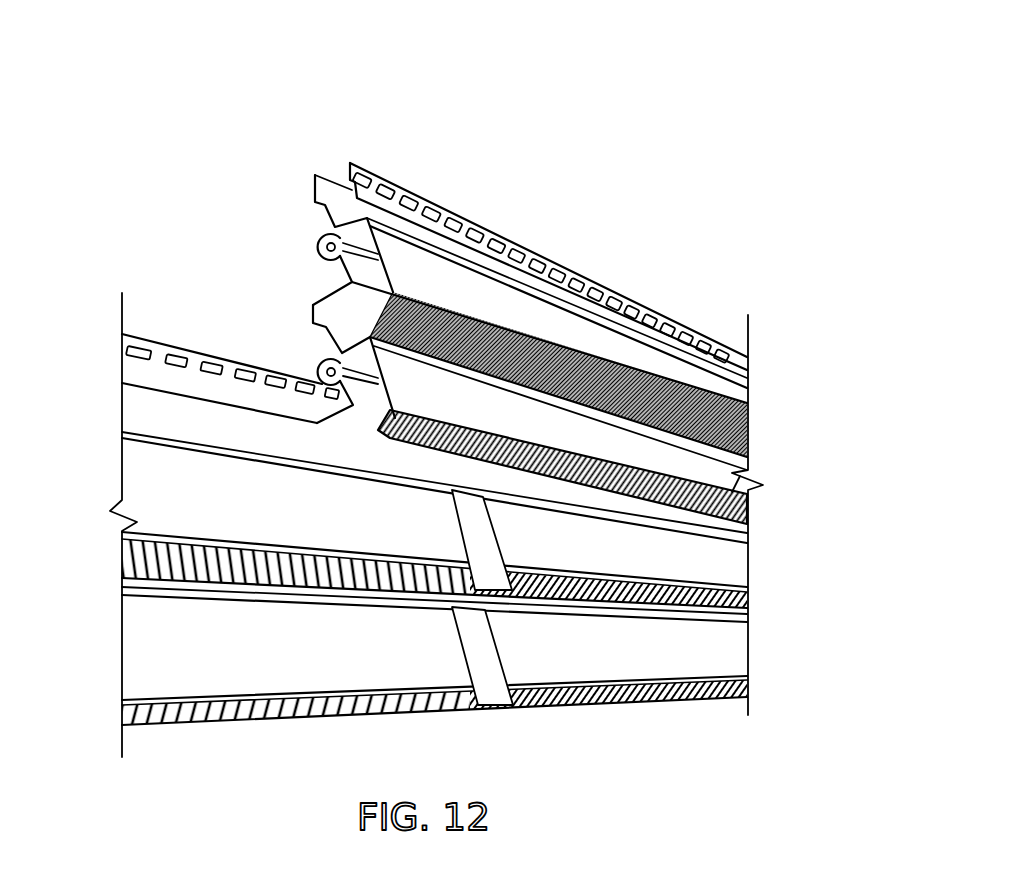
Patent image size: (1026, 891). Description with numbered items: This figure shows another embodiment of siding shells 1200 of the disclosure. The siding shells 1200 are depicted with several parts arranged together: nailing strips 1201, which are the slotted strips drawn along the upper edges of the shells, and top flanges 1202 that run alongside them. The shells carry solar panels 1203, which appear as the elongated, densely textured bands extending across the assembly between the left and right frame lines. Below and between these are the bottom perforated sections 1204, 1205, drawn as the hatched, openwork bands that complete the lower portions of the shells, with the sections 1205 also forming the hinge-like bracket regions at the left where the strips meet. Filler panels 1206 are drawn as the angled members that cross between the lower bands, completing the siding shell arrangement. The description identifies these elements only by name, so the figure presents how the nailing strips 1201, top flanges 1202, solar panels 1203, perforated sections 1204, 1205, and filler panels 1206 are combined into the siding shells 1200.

The siding shells 1200 is at (466, 398).
The nailing strips 1201 is at (585, 276).
The top flanges 1202 is at (740, 381).
The solar panels 1203 is at (738, 410).
The bottom perforated sections 1204 is at (750, 535).
The bottom perforated sections 1205 is at (352, 293).
The filler panels 1206 is at (488, 553).